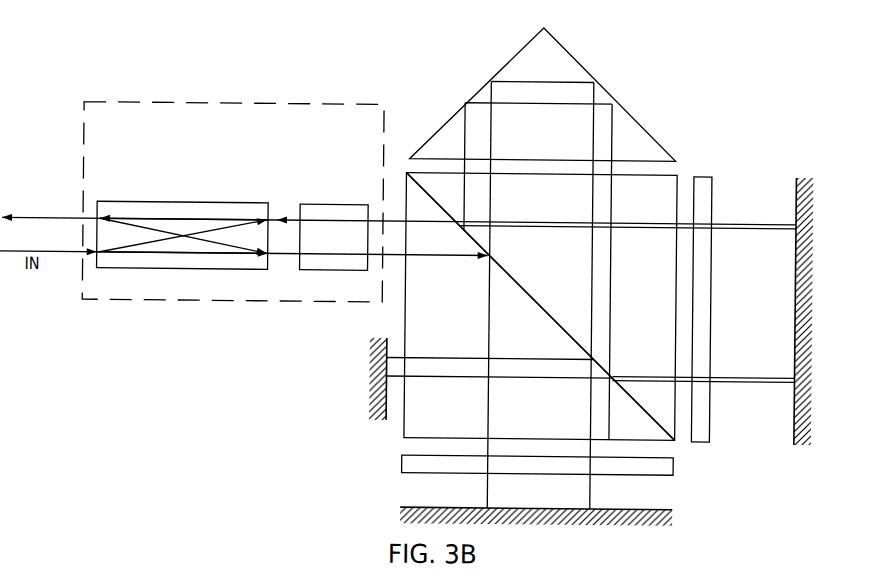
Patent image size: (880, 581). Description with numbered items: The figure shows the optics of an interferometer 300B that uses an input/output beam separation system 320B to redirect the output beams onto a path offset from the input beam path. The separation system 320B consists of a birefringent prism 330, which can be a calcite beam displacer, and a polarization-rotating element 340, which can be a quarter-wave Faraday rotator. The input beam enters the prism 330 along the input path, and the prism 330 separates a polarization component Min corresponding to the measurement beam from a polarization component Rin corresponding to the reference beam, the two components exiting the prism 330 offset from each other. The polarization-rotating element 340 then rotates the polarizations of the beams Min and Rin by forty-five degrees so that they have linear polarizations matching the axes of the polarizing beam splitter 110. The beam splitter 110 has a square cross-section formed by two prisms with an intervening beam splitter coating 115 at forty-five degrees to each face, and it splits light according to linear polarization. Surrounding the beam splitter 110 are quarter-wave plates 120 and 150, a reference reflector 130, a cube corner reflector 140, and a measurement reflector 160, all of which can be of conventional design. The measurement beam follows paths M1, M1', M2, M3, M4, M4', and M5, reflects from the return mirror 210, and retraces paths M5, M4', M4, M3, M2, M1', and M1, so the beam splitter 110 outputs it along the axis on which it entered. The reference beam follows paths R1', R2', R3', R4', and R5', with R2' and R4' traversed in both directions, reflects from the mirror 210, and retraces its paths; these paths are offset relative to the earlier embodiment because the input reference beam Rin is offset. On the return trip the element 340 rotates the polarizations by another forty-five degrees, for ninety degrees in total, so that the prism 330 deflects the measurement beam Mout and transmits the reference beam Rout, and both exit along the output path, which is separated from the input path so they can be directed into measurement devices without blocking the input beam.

The interferometer 300B is at (236, 54).
The input/output beam separation system 320B is at (300, 161).
The birefringent prism 330 is at (177, 233).
The polarization-rotating element 340 is at (346, 272).
The polarizing beam splitter 110 is at (455, 430).
The beam splitter coating 115 is at (550, 314).
The quarter-wave plate 120 is at (404, 464).
The reference reflector 130 is at (675, 511).
The cube corner reflector 140 is at (582, 66).
The quarter-wave plate 150 is at (698, 174).
The measurement reflector 160 is at (810, 443).
The return mirror 210 is at (370, 391).
The measurement beam path M1 is at (399, 208).
The measurement beam path M1' is at (627, 241).
The measurement beam path M2 is at (464, 149).
The measurement beam path M3 is at (614, 147).
The measurement beam path M4 is at (704, 363).
The measurement beam path M4' is at (703, 392).
The measurement beam path M5 is at (547, 380).
The reference beam path R1' is at (510, 317).
The reference beam path R2' is at (507, 295).
The reference beam path R3' is at (573, 295).
The reference beam path R4' is at (571, 430).
The reference beam path R5' is at (490, 347).
The output measurement beam Mout is at (133, 220).
The output reference beam Rout is at (200, 220).
The measurement beam polarization component Min is at (148, 245).
The reference beam polarization component Rin is at (200, 258).